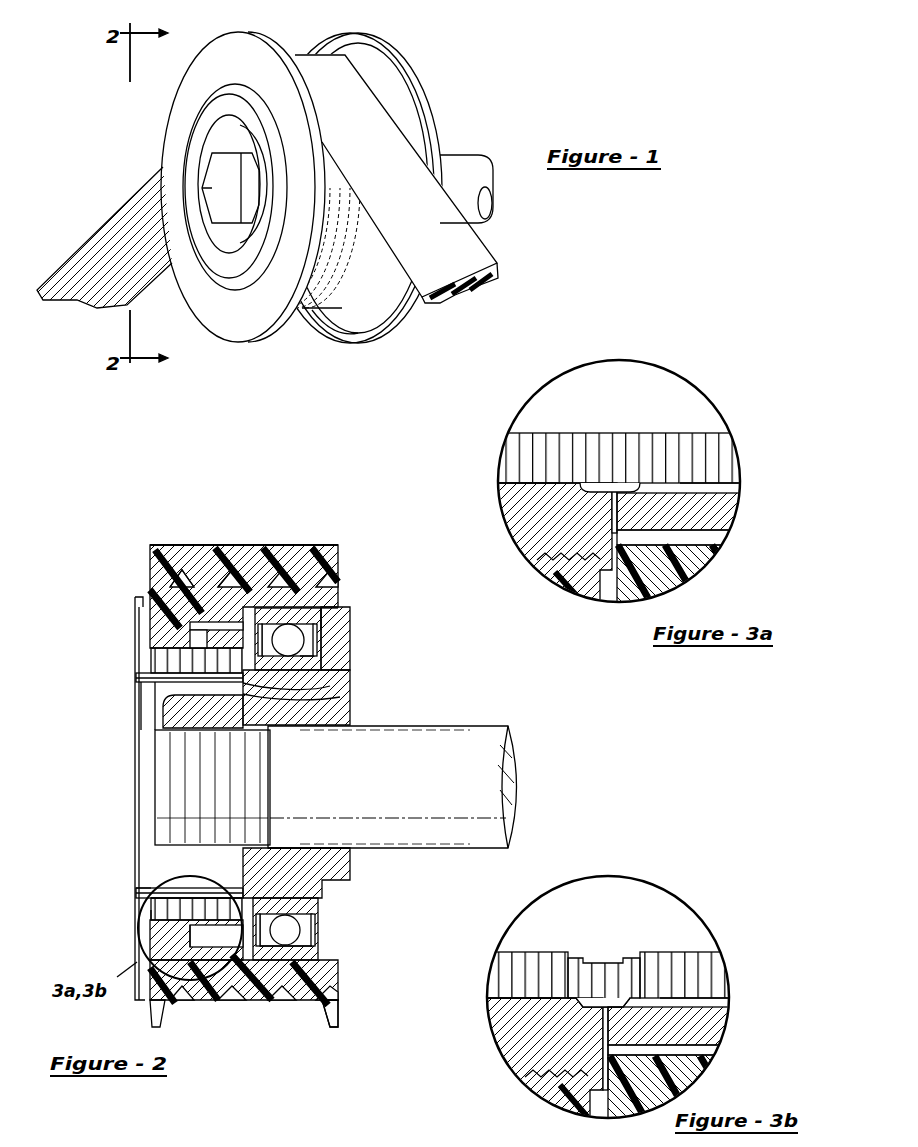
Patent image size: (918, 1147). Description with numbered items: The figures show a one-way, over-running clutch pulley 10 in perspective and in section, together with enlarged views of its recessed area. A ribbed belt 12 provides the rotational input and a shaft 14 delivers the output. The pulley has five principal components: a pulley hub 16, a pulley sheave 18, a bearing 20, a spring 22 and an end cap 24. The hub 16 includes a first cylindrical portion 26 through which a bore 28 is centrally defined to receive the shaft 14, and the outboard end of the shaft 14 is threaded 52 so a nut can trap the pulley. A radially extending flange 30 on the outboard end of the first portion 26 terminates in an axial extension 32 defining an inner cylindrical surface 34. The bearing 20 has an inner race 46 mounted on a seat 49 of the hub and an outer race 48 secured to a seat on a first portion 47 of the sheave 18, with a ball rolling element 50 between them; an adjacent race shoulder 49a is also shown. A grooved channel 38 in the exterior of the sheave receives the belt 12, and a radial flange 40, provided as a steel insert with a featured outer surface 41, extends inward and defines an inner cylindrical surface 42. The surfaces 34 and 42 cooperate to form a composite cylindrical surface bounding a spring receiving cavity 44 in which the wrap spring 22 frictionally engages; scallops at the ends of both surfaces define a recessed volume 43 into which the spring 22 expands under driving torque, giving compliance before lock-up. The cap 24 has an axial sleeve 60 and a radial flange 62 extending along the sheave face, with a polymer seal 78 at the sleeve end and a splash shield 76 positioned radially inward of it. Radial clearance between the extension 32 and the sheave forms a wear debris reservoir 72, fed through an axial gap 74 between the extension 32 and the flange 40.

In FIG. 1, the clutch pulley 10 is at (221, 350).
In FIG. 2, the clutch pulley 10 is at (284, 513).
In FIG. 1, the belt 12 is at (462, 255).
In FIG. 2, the belt 12 is at (203, 546).
In FIG. 1, the shaft 14 is at (462, 165).
In FIG. 2, the shaft 14 is at (468, 740).
In FIG. 2, the pulley hub 16 is at (312, 731).
In FIG. 3B, the pulley hub 16 is at (700, 1020).
In FIG. 1, the pulley sheave 18 is at (342, 310).
In FIG. 2, the pulley sheave 18 is at (138, 567).
In FIG. 3A, the pulley sheave 18 is at (560, 523).
In FIG. 3B, the pulley sheave 18 is at (550, 1040).
In FIG. 2, the bearing 20 is at (334, 620).
In FIG. 2, the spring 22 is at (146, 672).
In FIG. 3A, the spring 22 is at (702, 447).
In FIG. 3B, the spring 22 is at (693, 960).
In FIG. 1, the end cap 24 is at (210, 148).
In FIG. 2, the end cap 24 is at (128, 639).
In FIG. 2, the first cylindrical portion 26 is at (313, 862).
In FIG. 2, the bore 28 is at (330, 848).
In FIG. 2, the radially extending flange 30 is at (262, 615).
In FIG. 2, the axial extension 32 is at (207, 632).
In FIG. 3A, the axial extension 32 is at (713, 503).
In FIG. 2, the inner cylindrical surface 34 is at (200, 880).
In FIG. 3A, the inner cylindrical surface 34 is at (707, 480).
In FIG. 3B, the inner cylindrical surface 34 is at (693, 997).
In FIG. 2, the grooved channel 38 is at (312, 990).
In FIG. 2, the radial flange 40 is at (180, 928).
In FIG. 3A, the radial flange 40 is at (537, 500).
In FIG. 3A, the featured outer surface 41 is at (550, 582).
In FIG. 3B, the featured outer surface 41 is at (540, 1090).
In FIG. 2, the inner cylindrical surface 42 is at (165, 890).
In FIG. 3A, the inner cylindrical surface 42 is at (550, 477).
In FIG. 3B, the inner cylindrical surface 42 is at (535, 993).
In FIG. 2, the recessed volume 43 is at (160, 952).
In FIG. 3A, the recessed volume 43 is at (628, 490).
In FIG. 3B, the recessed volume 43 is at (623, 970).
In FIG. 2, the spring receiving cavity 44 is at (170, 710).
In FIG. 2, the inner race 46 is at (303, 907).
In FIG. 2, the first portion 47 is at (333, 607).
In FIG. 2, the outer race 48 is at (297, 955).
In FIG. 2, the seat 49 is at (303, 653).
In FIG. 2, the race shoulder 49a is at (341, 606).
In FIG. 2, the rolling element 50 is at (290, 935).
In FIG. 2, the threads 52 is at (155, 785).
In FIG. 2, the axial sleeve 60 is at (183, 692).
In FIG. 2, the radial flange 62 is at (135, 910).
In FIG. 3A, the wear debris reservoir 72 is at (712, 537).
In FIG. 3A, the axial gap 74 is at (682, 557).
In FIG. 2, the splash shield 76 is at (243, 694).
In FIG. 2, the polymer seal 78 is at (243, 683).